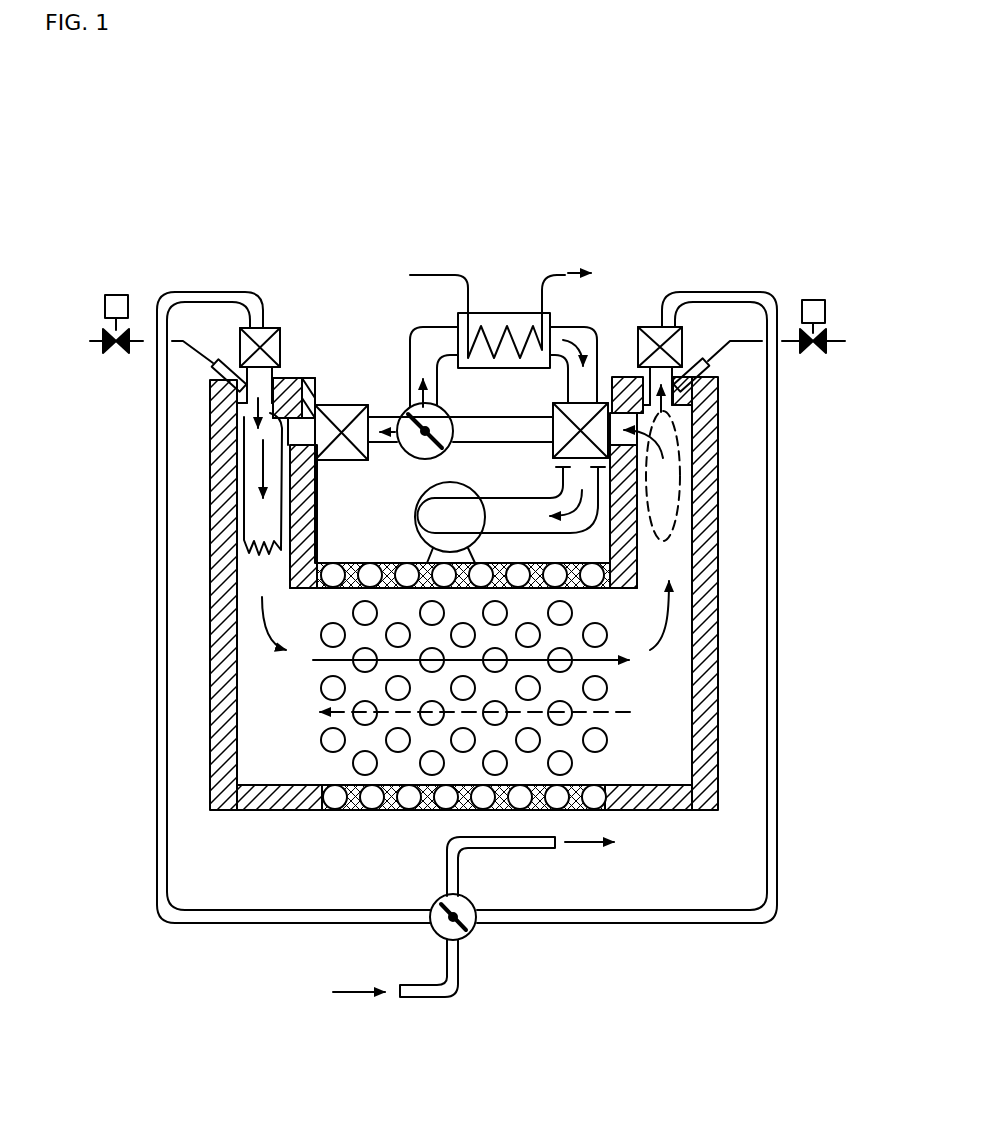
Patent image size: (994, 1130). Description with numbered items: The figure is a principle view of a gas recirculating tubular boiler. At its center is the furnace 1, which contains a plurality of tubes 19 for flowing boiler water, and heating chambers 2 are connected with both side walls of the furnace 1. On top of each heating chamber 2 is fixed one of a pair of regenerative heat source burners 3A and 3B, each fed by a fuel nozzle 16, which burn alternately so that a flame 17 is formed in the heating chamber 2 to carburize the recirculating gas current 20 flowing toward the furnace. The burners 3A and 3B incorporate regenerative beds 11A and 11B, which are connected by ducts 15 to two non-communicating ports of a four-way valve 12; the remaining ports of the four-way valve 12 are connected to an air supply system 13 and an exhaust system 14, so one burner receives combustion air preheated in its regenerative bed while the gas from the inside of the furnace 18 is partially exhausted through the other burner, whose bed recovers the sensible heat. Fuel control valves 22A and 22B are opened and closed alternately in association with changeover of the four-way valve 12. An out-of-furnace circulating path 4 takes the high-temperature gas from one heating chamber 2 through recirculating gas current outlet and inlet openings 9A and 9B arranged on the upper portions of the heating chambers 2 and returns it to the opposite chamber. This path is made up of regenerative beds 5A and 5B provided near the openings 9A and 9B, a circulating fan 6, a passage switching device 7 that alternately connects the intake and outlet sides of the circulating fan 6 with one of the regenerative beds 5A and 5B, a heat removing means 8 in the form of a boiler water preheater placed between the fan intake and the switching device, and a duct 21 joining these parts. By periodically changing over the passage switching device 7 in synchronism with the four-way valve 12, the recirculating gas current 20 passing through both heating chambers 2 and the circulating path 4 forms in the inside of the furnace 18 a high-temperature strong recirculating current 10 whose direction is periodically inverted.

The furnace 1 is at (711, 745).
The heating chambers 2 is at (263, 572).
The heat source burner 3A is at (239, 281).
The heat source burner 3B is at (719, 281).
The out-of-furnace circulating path 4 is at (580, 249).
The regenerative bed 5A is at (341, 408).
The regenerative bed 5B is at (560, 448).
The circulating fan 6 is at (416, 520).
The passage switching device 7 is at (401, 411).
The heat removing means 8 is at (498, 313).
The recirculating gas current outlet and inlet opening 9A is at (302, 388).
The recirculating gas current outlet and inlet opening 9B is at (612, 390).
The high-temperature strong recirculating current 10 is at (254, 632).
The regenerative bed 11A is at (283, 336).
The regenerative bed 11B is at (644, 336).
The four-way valve 12 is at (468, 935).
The air supply system 13 is at (425, 999).
The exhaust system 14 is at (517, 849).
The ducts 15 is at (158, 828).
The fuel nozzle 16 is at (213, 370).
The flame 17 is at (247, 485).
The inside of the furnace 18 is at (473, 771).
The tubes 19 is at (321, 690).
The recirculating gas current 20 is at (283, 433).
The duct 21 is at (517, 428).
The fuel control valve 22A is at (116, 303).
The fuel control valve 22B is at (808, 302).